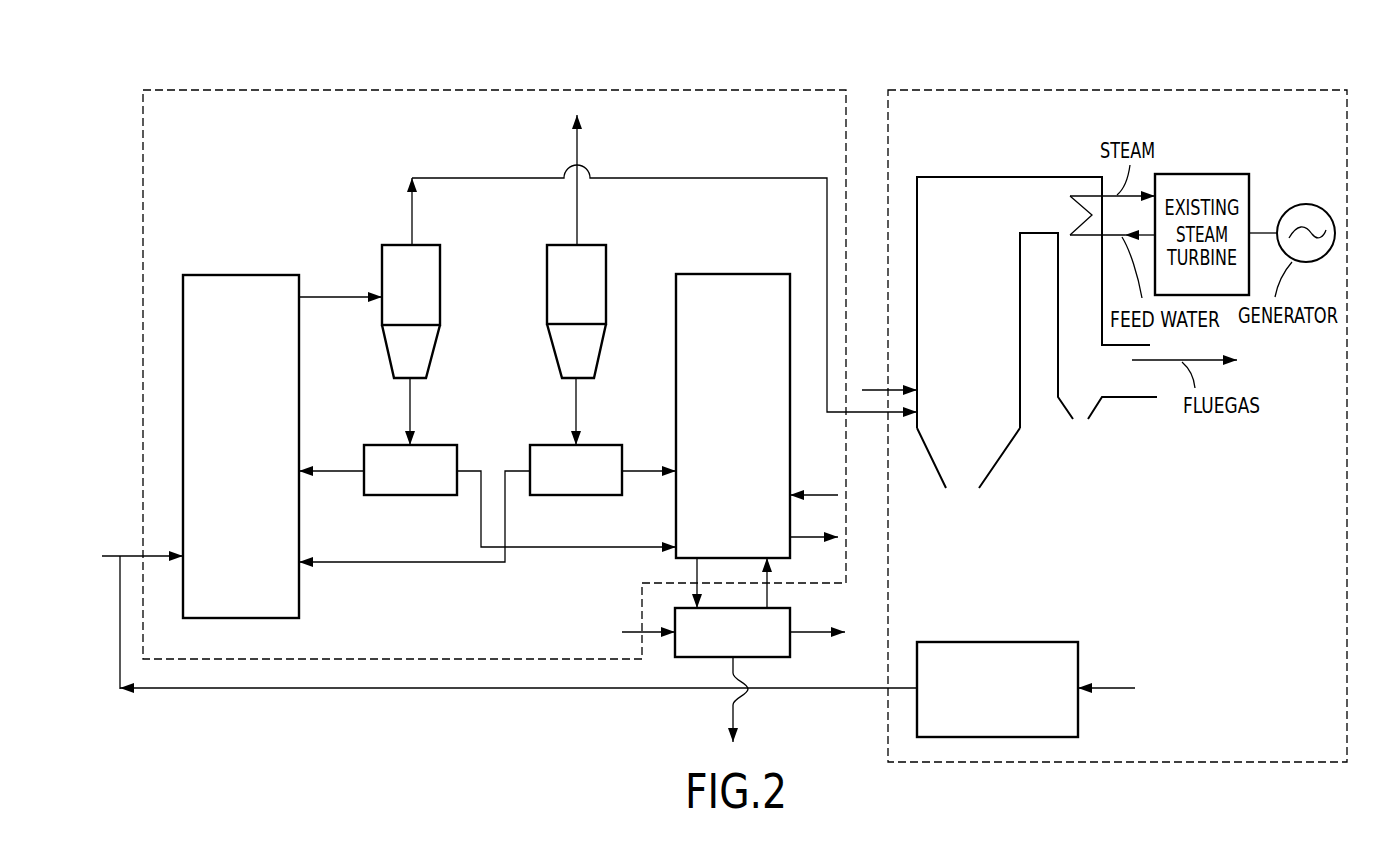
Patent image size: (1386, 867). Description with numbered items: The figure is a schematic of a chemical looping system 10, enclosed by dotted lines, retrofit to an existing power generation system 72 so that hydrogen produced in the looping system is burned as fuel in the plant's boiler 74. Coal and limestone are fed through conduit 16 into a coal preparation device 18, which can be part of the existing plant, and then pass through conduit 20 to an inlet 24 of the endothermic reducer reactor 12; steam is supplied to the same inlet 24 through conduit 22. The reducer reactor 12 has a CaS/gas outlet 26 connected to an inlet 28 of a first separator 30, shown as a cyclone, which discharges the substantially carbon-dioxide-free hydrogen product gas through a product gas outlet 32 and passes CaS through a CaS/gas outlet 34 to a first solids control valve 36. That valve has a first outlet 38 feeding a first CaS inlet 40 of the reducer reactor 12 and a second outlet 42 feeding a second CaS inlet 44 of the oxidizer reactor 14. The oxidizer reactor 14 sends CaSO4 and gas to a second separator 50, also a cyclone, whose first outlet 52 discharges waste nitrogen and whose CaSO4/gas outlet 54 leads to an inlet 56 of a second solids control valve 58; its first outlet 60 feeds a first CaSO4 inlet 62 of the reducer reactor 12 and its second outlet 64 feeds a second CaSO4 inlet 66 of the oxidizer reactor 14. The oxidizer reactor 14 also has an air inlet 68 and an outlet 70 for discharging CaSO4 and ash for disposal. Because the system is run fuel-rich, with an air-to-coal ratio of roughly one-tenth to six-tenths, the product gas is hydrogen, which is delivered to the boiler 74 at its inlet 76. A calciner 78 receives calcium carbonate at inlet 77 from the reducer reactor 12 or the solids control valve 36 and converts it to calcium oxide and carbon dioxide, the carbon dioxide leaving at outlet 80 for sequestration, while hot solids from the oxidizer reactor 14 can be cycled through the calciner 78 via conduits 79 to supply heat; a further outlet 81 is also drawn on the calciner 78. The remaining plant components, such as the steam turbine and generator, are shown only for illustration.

The chemical looping system 10 is at (832, 87).
The endothermic reducer reactor 12 is at (228, 397).
The oxidizer reactor 14 is at (723, 381).
The conduit 16 is at (1118, 690).
The coal preparation device 18 is at (985, 702).
The conduit 20 is at (432, 689).
The conduit 22 is at (112, 556).
The inlet 24 is at (184, 556).
The CaS/gas outlet 26 is at (298, 297).
The inlet 28 is at (386, 296).
The first separator 30 is at (399, 305).
The product gas outlet 32 is at (410, 232).
The CaS/gas outlet 34 is at (405, 385).
The first solids control valve 36 is at (398, 486).
The first outlet 38 is at (367, 468).
The first CaS inlet 40 is at (303, 475).
The second outlet 42 is at (458, 470).
The second CaS inlet 44 is at (677, 547).
The second separator 50 is at (564, 305).
The first outlet 52 is at (579, 243).
The CaSO4/gas outlet 54 is at (578, 380).
The inlet 56 is at (580, 446).
The second solids control valve 58 is at (564, 486).
The first outlet 60 is at (529, 471).
The first CaSO4 inlet 62 is at (300, 562).
The second outlet 64 is at (623, 466).
The second CaSO4 inlet 66 is at (676, 471).
The air inlet 68 is at (790, 492).
The outlet 70 is at (793, 535).
The power generation system 72 is at (1283, 87).
The boiler 74 is at (956, 350).
The inlet 76 is at (916, 413).
The inlet 77 is at (626, 632).
The calciner 78 is at (720, 645).
The conduits 79 is at (766, 592).
The outlet 80 is at (733, 712).
The outlet line 81 is at (793, 632).